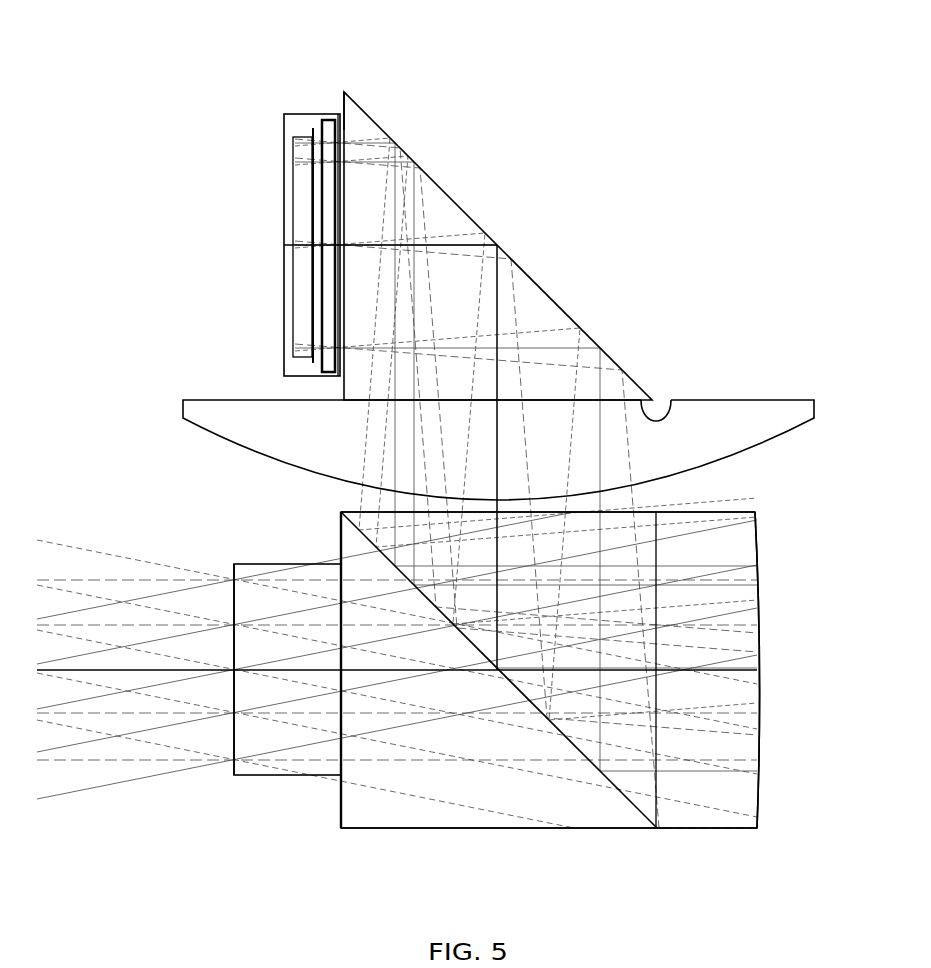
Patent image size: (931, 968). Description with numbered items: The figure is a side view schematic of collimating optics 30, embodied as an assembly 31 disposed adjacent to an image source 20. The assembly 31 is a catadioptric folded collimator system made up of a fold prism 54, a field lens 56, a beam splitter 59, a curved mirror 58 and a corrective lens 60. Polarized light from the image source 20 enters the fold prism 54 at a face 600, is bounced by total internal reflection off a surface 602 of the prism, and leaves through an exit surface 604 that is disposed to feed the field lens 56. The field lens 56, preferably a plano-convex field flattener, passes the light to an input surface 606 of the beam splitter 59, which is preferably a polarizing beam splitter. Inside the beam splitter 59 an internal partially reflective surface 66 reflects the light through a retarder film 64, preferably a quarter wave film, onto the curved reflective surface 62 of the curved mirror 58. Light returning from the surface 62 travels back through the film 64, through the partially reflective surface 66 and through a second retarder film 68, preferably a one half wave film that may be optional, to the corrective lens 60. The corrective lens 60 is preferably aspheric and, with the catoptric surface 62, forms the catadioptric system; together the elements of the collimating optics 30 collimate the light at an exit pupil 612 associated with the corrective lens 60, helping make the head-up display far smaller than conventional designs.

The image source 20 is at (284, 192).
The collimating optics 30 is at (619, 131).
The assembly 31 is at (467, 118).
The fold prism 54 is at (544, 290).
The field lens 56 is at (798, 400).
The curved mirror 58 is at (757, 765).
The beam splitter 59 is at (505, 829).
The corrective lens 60 is at (240, 778).
The curved reflective surface 62 is at (750, 540).
The retarder film 64 is at (657, 800).
The internal partially reflective surface 66 is at (601, 773).
The retarder film 68 is at (338, 803).
The face 600 is at (345, 92).
The surface 602 is at (498, 244).
The exit surface 604 is at (668, 400).
The input surface 606 is at (640, 512).
The exit pupil 612 is at (232, 598).